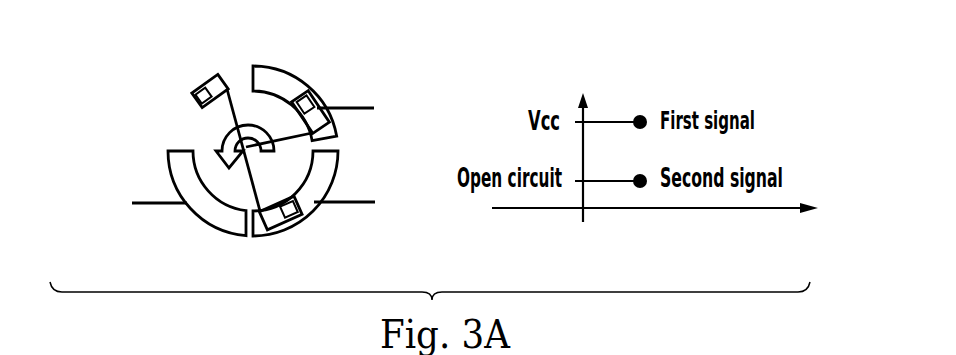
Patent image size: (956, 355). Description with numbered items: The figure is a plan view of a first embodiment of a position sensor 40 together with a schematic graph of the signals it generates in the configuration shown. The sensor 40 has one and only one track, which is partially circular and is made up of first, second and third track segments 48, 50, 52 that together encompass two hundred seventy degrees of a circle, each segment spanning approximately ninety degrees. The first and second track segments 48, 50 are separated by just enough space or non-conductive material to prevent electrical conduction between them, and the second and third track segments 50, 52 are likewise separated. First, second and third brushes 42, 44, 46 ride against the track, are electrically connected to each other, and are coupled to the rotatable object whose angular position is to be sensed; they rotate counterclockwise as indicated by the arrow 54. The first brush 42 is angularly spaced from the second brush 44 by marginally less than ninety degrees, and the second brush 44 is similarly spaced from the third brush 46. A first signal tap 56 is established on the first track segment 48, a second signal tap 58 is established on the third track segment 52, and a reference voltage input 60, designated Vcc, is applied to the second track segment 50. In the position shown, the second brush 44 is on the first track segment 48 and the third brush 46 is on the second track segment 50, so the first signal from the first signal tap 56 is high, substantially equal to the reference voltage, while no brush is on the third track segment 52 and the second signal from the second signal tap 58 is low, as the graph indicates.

The position sensor 40 is at (146, 89).
The first brush 42 is at (209, 76).
The second brush 44 is at (304, 96).
The third brush 46 is at (292, 227).
The first track segment 48 is at (337, 135).
The second track segment 50 is at (327, 177).
The third track segment 52 is at (217, 223).
The arrow 54 is at (223, 140).
The first signal tap 56 is at (358, 106).
The second signal tap 58 is at (146, 202).
The reference voltage input 60 is at (348, 204).